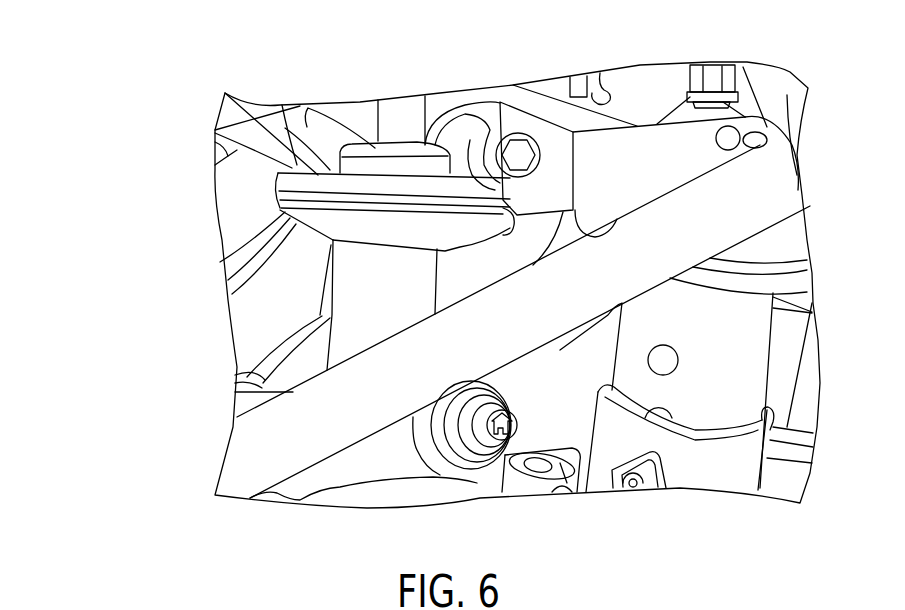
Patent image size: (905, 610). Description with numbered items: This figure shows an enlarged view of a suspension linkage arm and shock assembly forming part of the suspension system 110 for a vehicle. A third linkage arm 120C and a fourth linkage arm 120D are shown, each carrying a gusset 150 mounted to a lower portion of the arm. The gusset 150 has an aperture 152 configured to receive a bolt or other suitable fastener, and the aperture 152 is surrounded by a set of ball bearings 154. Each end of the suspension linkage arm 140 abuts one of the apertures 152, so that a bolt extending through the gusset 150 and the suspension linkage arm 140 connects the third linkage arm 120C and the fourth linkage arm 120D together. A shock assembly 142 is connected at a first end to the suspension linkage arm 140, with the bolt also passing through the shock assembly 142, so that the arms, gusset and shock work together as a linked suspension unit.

The suspension system 110 is at (122, 78).
The shock assembly 142 is at (322, 183).
The third linkage arm 120C is at (248, 280).
The suspension linkage arm 140 is at (245, 407).
The fourth linkage arm 120D is at (780, 197).
The gusset 150 is at (377, 467).
The aperture 152 is at (490, 452).
The ball bearings 154 is at (483, 452).